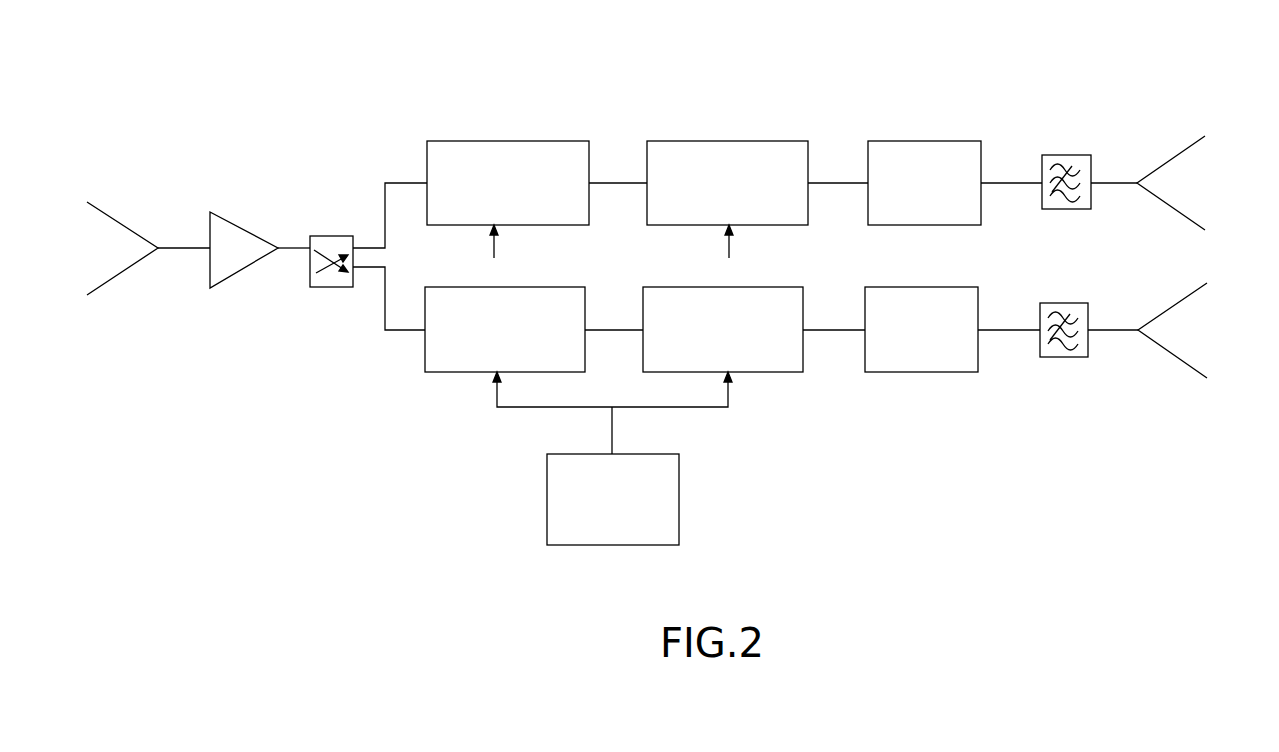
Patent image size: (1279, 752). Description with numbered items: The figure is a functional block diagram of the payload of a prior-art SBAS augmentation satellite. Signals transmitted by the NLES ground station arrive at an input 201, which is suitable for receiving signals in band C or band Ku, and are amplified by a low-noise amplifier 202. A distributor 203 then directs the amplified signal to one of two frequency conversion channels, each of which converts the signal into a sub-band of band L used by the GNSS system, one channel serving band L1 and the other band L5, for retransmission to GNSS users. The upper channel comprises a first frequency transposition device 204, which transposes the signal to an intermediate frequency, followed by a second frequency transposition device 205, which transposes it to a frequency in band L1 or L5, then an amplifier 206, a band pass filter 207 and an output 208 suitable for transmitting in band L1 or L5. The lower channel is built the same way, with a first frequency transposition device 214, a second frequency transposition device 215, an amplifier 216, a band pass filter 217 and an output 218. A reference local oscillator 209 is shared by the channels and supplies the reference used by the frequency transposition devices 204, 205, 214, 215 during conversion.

The input 201 is at (117, 215).
The low-noise amplifier 202 is at (232, 218).
The distributor 203 is at (323, 287).
The first frequency transposition device 204 is at (492, 141).
The second frequency transposition device 205 is at (717, 141).
The amplifier 206 is at (917, 141).
The band pass filter 207 is at (1063, 155).
The output 208 is at (1187, 148).
The reference local oscillator 209 is at (679, 488).
The first frequency transposition device 214 is at (443, 372).
The second frequency transposition device 215 is at (772, 372).
The amplifier 216 is at (922, 372).
The band pass filter 217 is at (1067, 357).
The output 218 is at (1188, 300).